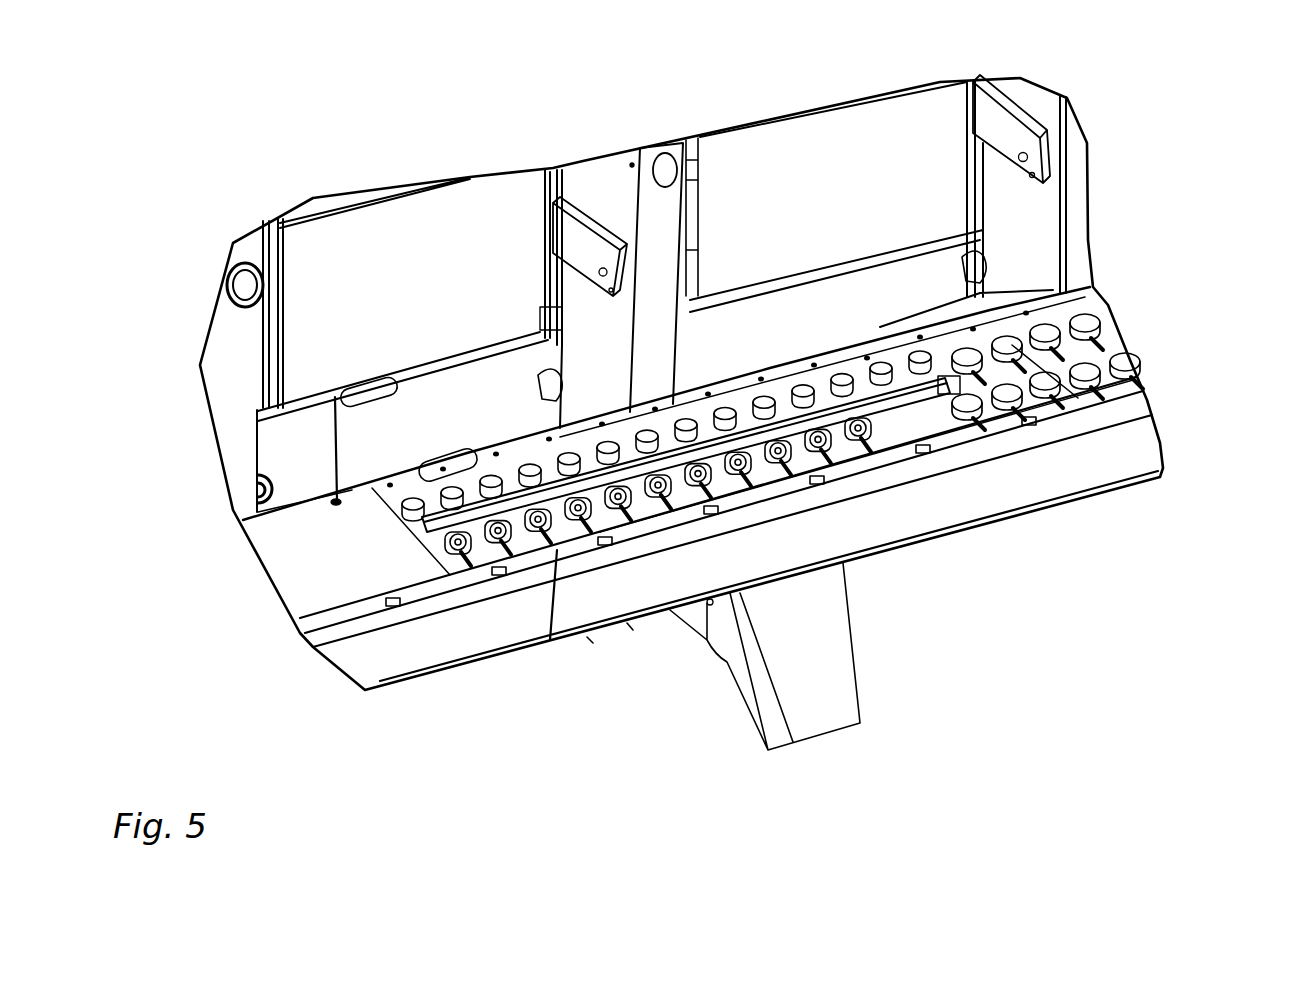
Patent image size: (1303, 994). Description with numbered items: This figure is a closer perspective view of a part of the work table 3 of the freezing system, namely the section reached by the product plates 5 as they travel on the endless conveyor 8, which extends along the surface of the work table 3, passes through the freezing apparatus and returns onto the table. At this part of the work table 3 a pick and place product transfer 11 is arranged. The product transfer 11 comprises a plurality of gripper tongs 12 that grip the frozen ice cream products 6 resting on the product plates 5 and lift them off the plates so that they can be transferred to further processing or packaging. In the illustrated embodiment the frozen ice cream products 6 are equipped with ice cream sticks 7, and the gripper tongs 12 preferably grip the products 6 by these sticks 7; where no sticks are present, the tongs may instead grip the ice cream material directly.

The work table 3 is at (847, 563).
The product plates 5 is at (1035, 426).
The frozen ice cream products 6 is at (1063, 350).
The ice cream sticks 7 is at (1067, 385).
The endless conveyor 8 is at (767, 392).
The pick and place product transfer 11 is at (817, 465).
The gripper tongs 12 is at (845, 420).